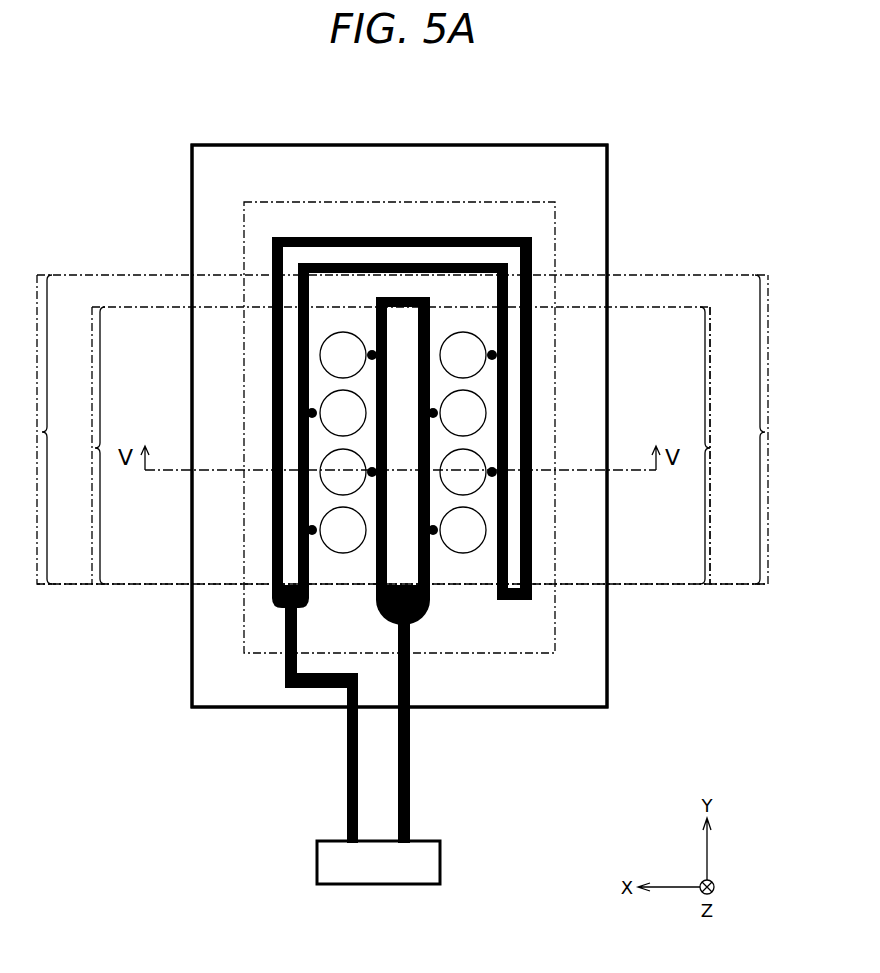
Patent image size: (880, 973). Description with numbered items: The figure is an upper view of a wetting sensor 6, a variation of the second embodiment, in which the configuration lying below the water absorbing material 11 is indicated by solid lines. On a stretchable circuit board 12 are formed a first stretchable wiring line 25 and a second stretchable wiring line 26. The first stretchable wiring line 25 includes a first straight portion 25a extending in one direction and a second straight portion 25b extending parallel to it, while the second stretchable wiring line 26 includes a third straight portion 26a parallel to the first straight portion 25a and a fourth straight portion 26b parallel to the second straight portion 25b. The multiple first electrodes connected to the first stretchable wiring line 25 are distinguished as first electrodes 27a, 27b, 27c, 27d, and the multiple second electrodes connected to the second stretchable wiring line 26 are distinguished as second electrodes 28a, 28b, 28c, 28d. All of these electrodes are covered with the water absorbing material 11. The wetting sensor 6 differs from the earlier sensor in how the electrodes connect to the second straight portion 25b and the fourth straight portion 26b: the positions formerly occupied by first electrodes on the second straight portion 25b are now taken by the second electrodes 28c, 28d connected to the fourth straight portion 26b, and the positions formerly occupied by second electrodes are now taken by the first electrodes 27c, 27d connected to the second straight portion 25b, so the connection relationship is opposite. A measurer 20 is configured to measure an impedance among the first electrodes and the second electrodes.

The wetting sensor 6 is at (383, 76).
The water absorbing material 11 is at (595, 220).
The stretchable circuit board 12 is at (545, 254).
The measurer 20 is at (440, 862).
The first stretchable wiring line 25 is at (404, 297).
The first straight portion 25a is at (381, 445).
The second straight portion 25b is at (727, 445).
The second stretchable wiring line 26 is at (330, 237).
The third straight portion 26a is at (384, 429).
The fourth straight portion 26b is at (423, 429).
The first electrode 27a is at (328, 342).
The first electrode 27b is at (332, 492).
The first electrode 27c is at (482, 394).
The first electrode 27d is at (473, 550).
The second electrode 28a is at (330, 397).
The second electrode 28b is at (332, 550).
The second electrode 28c is at (480, 342).
The second electrode 28d is at (480, 492).